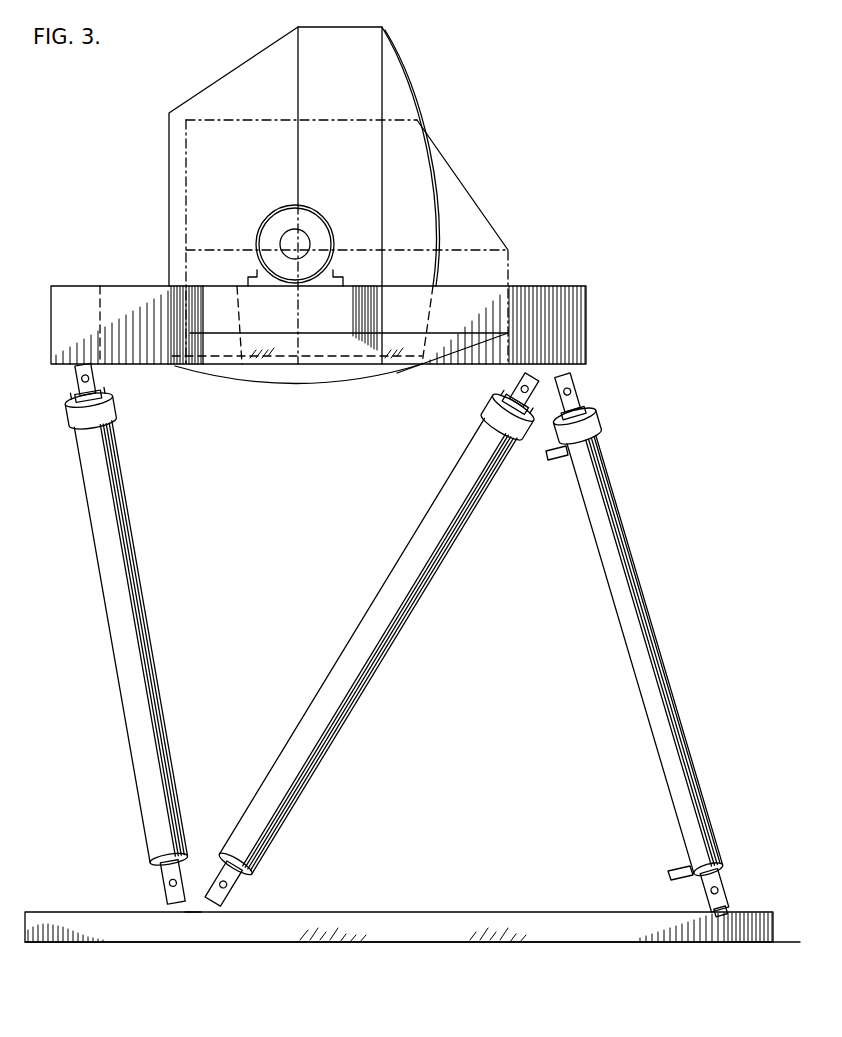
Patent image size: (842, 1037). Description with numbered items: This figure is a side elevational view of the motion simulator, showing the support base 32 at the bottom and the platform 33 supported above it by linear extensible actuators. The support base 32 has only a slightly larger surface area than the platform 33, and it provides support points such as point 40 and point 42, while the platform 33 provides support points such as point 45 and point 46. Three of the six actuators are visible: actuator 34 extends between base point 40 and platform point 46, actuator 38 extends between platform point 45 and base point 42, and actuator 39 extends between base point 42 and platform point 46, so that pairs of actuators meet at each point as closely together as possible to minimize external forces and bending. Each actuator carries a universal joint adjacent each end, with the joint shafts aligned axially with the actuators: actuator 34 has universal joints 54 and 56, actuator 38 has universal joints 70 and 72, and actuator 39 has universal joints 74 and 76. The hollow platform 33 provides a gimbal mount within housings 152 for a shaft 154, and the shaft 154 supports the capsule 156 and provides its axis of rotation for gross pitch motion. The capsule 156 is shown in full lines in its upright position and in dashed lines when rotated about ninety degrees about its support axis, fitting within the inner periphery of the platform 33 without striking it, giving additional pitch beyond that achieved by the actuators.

The capsule 156 is at (389, 66).
The housings 152 is at (272, 221).
The shaft 154 is at (302, 239).
The platform 33 is at (582, 304).
The support point 45 is at (82, 380).
The universal joint 72 is at (96, 382).
The support point 46 is at (526, 372).
The universal joint 76 is at (516, 389).
The universal joint 56 is at (582, 397).
The linear extensible actuator 38 is at (147, 728).
The linear extensible actuator 39 is at (358, 628).
The linear extensible actuator 34 is at (667, 734).
The support base 32 is at (448, 912).
The universal joint 70 is at (170, 890).
The universal joint 74 is at (229, 905).
The support point 42 is at (191, 914).
The universal joint 54 is at (710, 888).
The support point 40 is at (740, 906).